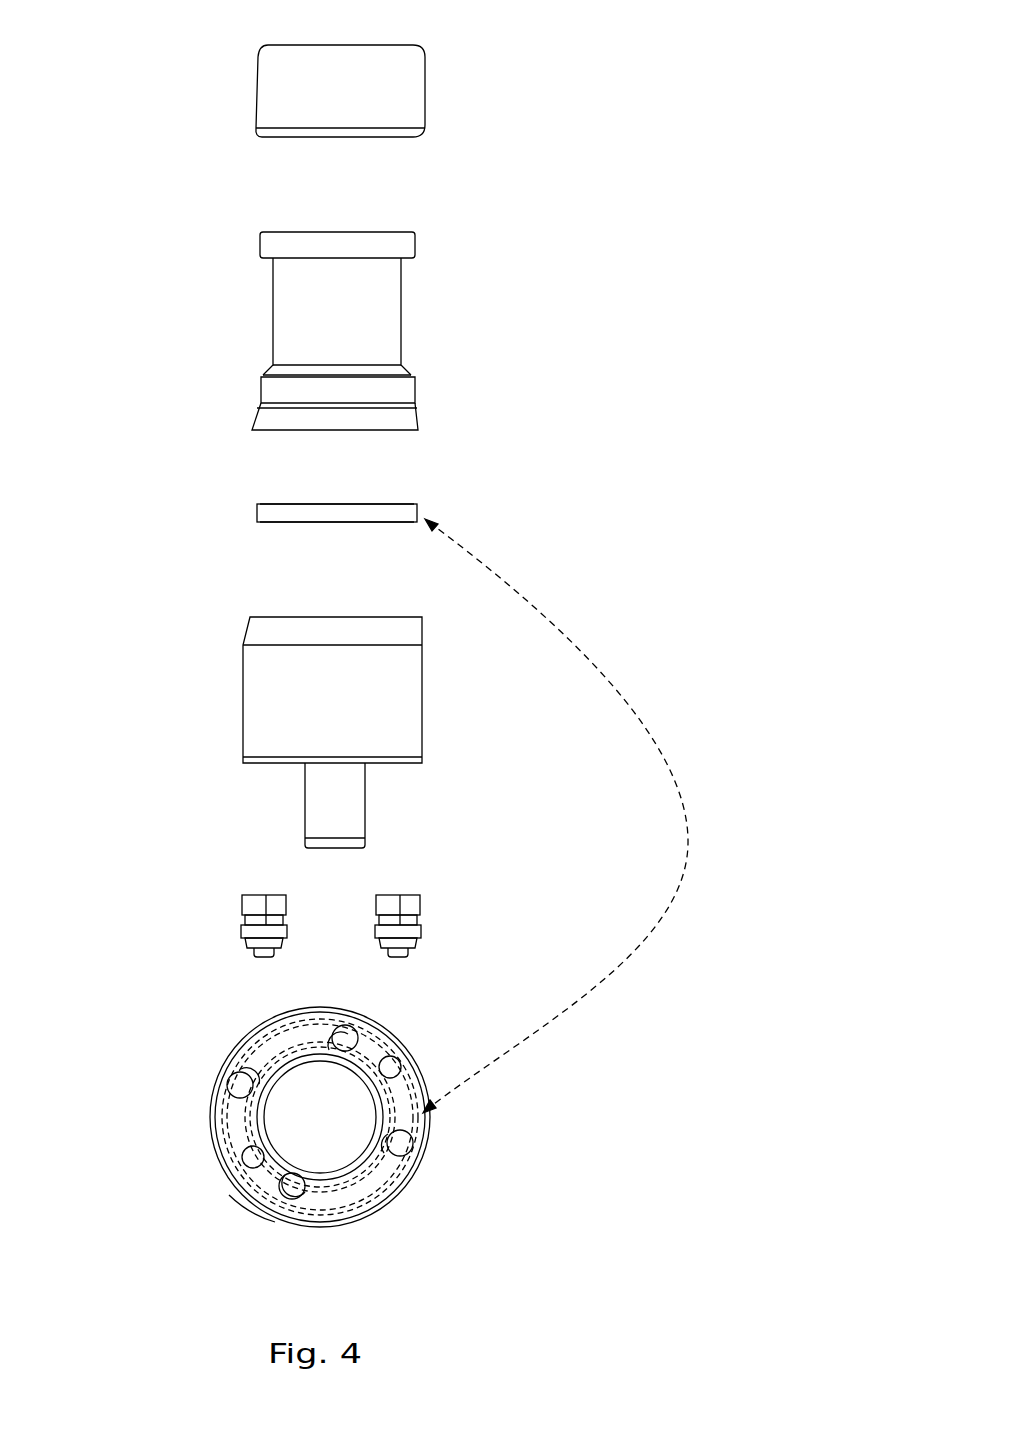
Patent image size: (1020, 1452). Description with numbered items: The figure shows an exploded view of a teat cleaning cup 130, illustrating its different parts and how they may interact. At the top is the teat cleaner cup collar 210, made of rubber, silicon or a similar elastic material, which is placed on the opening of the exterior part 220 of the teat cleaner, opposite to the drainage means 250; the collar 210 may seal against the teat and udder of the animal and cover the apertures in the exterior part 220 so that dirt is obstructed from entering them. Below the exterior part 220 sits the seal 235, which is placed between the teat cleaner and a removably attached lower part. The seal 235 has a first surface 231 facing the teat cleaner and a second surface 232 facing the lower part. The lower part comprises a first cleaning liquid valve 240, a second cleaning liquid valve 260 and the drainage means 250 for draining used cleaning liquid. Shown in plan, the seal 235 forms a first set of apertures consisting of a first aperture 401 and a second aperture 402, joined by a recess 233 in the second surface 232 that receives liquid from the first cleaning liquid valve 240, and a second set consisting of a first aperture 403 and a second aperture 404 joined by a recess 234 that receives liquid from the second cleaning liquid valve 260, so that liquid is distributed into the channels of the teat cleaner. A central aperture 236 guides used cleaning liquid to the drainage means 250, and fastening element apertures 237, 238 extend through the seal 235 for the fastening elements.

The teat cleaning cup 130 is at (737, 53).
The teat cleaner cup collar 210 is at (368, 99).
The exterior part 220 is at (384, 315).
The first surface 231 is at (277, 504).
The second surface 232 is at (277, 522).
The seal 235 is at (385, 512).
The drainage means 250 is at (365, 840).
The second cleaning liquid valve 260 is at (257, 948).
The first cleaning liquid valve 240 is at (407, 948).
The recess 233 is at (273, 1047).
The recess 234 is at (373, 1177).
The aperture 236 is at (295, 1115).
The fastening element aperture 237 is at (248, 1160).
The fastening element aperture 238 is at (388, 1072).
The first aperture 401 is at (345, 1040).
The second aperture 402 is at (240, 1085).
The first aperture 403 is at (300, 1190).
The second aperture 404 is at (397, 1147).